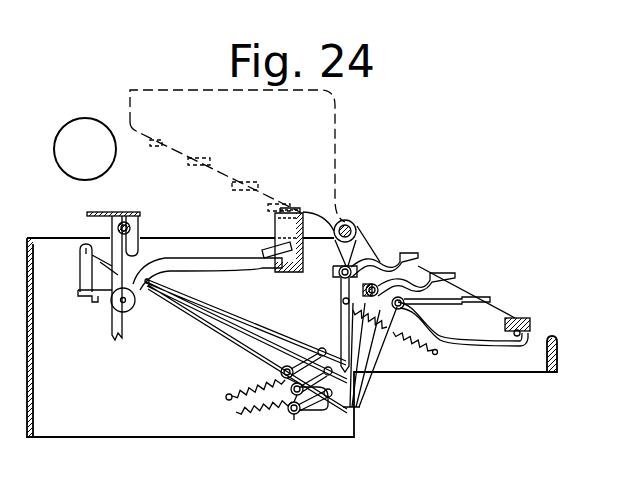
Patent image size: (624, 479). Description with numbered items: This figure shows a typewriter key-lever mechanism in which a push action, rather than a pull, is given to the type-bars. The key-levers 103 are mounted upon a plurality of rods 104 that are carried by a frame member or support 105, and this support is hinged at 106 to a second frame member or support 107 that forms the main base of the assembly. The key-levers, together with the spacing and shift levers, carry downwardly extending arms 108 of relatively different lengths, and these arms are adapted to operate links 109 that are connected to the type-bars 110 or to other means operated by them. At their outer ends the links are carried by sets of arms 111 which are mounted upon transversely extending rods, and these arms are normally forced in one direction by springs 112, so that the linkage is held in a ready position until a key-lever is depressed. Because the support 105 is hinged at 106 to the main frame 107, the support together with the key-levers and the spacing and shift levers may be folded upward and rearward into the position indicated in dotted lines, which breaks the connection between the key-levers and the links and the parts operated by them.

The key-levers 103 is at (405, 266).
The rods 104 is at (355, 252).
The frame member or support 105 is at (463, 352).
The hinge 106 is at (350, 221).
The frame member or support 107 is at (178, 427).
The downwardly extending arms 108 is at (375, 370).
The links 109 is at (223, 328).
The type-bars 110 is at (240, 265).
The sets of arms 111 is at (286, 365).
The springs 112 is at (250, 389).